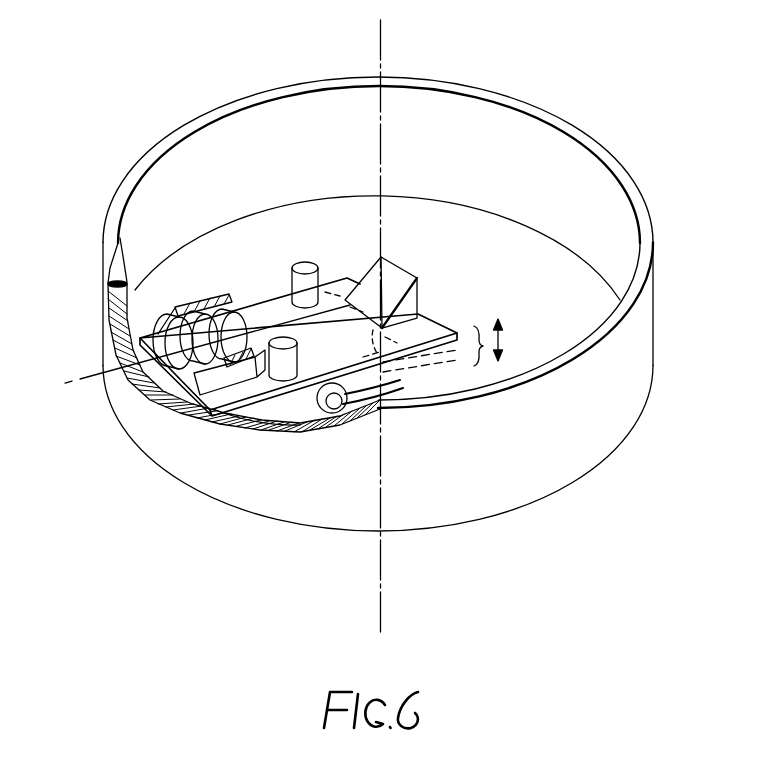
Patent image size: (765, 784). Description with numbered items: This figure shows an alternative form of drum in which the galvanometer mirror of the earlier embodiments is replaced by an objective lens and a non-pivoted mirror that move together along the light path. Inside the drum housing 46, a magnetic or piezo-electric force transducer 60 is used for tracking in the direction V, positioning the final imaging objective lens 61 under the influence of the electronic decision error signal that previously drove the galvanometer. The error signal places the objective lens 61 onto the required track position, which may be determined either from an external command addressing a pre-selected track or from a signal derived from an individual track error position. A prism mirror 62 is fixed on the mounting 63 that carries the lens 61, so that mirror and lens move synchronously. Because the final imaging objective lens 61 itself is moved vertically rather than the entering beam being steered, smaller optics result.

The housing 46 is at (235, 100).
The piezo-electric force transducer 60 is at (289, 407).
The final imaging objective lens 61 is at (180, 357).
The prism mirror 62 is at (402, 274).
The mounting 63 is at (437, 327).
The tracking direction V is at (499, 341).